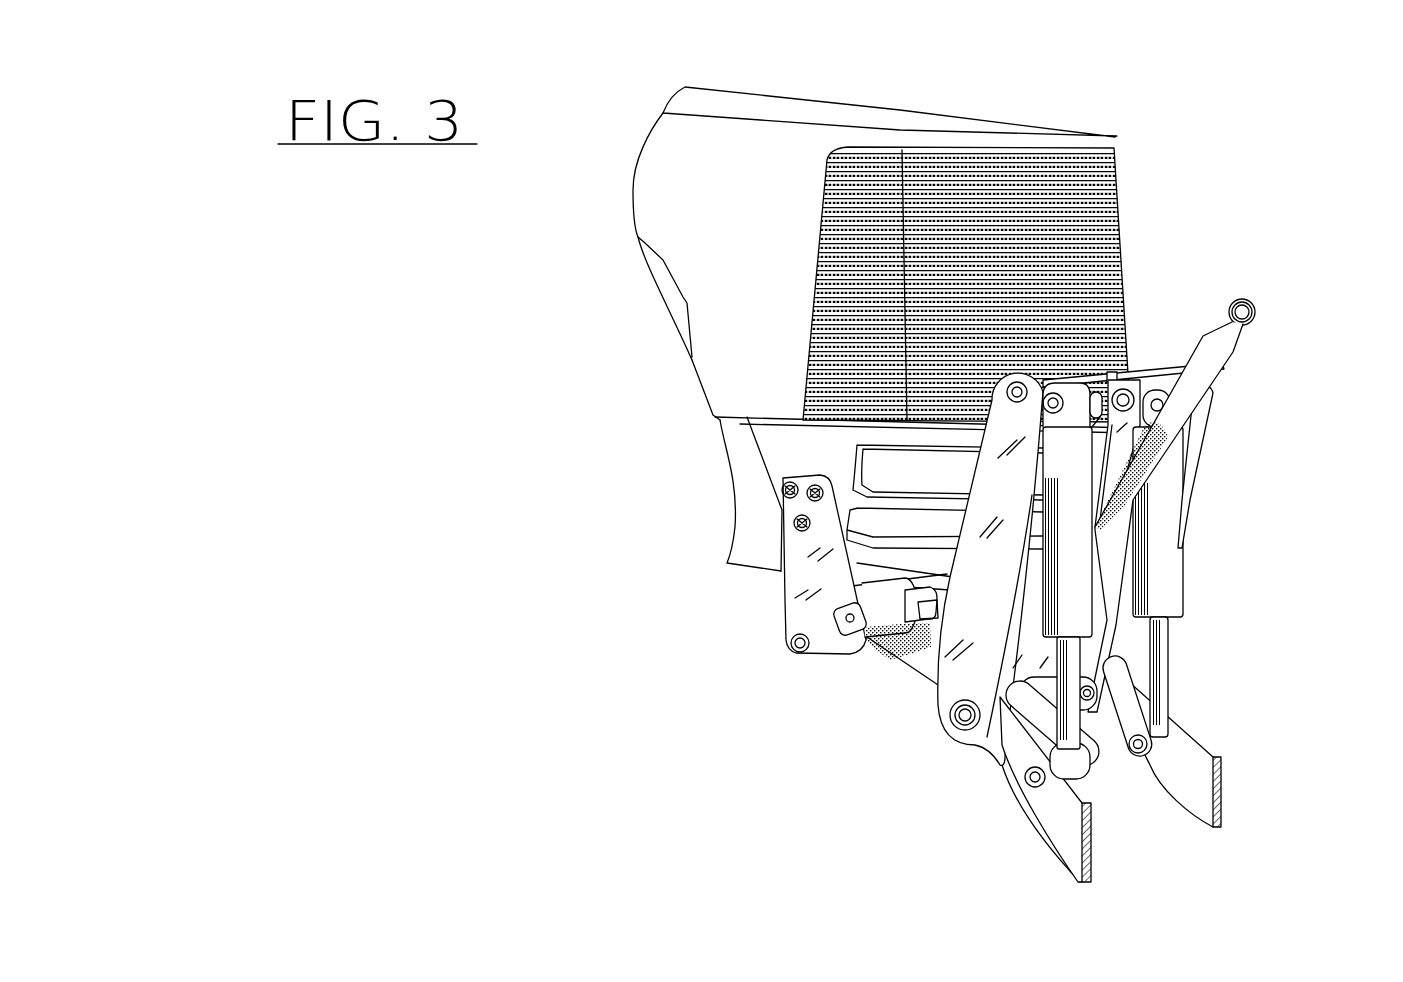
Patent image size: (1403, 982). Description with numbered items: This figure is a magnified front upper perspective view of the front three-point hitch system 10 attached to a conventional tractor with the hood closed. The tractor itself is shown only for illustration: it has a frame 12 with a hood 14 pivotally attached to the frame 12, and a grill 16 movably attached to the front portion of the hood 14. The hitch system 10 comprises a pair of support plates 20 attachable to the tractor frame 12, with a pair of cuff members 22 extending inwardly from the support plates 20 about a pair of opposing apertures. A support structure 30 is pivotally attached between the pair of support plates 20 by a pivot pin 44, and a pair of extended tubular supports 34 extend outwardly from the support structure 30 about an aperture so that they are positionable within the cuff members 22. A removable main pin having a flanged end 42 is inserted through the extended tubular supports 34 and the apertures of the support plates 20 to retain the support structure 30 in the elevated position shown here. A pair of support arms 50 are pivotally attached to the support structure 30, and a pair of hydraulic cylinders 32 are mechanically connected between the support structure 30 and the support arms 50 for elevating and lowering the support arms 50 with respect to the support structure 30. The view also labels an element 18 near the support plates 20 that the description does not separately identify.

The front three-point hitch system 10 is at (1272, 180).
The tractor frame 12 is at (750, 522).
The hood 14 is at (897, 122).
The grill 16 is at (1127, 262).
The mounting bracket 18 is at (787, 483).
The support plates 20 is at (777, 617).
The cuff members 22 is at (886, 650).
The support structure 30 is at (977, 680).
The hydraulic cylinders 32 is at (1173, 563).
The extended tubular supports 34 is at (913, 657).
The flanged end 42 is at (817, 653).
The pivot pin 44 is at (795, 652).
The support arms 50 is at (1067, 825).